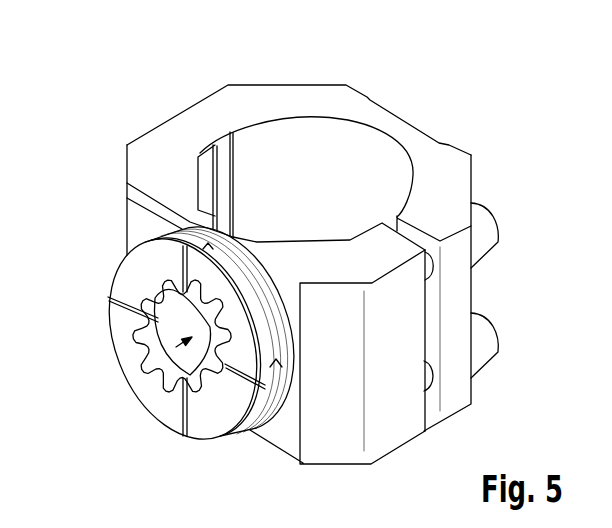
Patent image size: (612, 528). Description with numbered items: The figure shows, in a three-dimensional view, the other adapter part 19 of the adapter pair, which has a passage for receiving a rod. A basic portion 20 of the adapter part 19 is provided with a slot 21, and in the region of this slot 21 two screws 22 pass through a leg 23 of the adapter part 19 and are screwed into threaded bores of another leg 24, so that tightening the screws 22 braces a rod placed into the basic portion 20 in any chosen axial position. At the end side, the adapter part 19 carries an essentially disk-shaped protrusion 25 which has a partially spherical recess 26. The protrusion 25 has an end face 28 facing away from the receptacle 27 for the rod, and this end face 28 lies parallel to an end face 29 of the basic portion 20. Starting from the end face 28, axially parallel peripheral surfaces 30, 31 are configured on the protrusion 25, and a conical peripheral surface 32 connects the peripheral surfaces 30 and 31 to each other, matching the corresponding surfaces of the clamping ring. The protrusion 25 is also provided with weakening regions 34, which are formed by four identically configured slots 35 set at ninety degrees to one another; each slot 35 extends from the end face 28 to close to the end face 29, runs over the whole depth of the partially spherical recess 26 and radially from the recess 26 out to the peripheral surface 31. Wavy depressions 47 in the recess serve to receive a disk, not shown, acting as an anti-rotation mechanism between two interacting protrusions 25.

The adapter part 19 is at (175, 96).
The basic portion 20 is at (395, 128).
The slot 21 is at (428, 422).
The screws 22 is at (489, 239).
The leg 23 is at (459, 286).
The leg 24 is at (396, 437).
The protrusion 25 is at (102, 247).
The partially spherical recess 26 is at (160, 368).
The receptacle 27 is at (309, 133).
The end face 28 is at (204, 421).
The end face 29 is at (278, 440).
The peripheral surface 30 is at (233, 236).
The peripheral surface 31 is at (265, 258).
The conical peripheral surface 32 is at (170, 232).
The weakening regions 34 is at (192, 236).
The slots 35 is at (182, 248).
The wavy depressions 47 is at (153, 352).